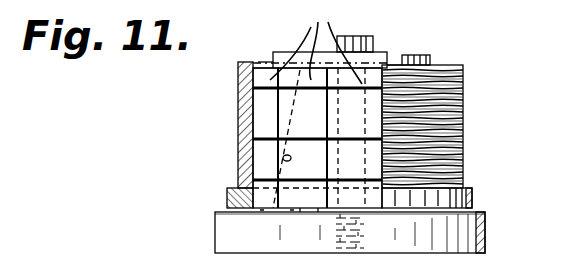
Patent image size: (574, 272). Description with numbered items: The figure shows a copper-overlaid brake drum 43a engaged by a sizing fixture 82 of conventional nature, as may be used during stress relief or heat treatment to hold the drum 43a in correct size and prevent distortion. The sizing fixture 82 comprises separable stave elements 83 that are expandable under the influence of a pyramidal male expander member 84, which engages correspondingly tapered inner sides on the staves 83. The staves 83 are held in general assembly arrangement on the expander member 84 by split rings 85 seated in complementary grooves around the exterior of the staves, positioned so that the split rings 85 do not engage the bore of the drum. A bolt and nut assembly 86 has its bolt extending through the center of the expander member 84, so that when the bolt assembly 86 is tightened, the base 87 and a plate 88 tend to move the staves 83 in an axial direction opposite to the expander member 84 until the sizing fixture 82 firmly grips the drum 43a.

The drum 43a is at (463, 120).
The sizing fixture 82 is at (260, 117).
The stave elements 83 is at (316, 49).
The expander member 84 is at (283, 155).
The split rings 85 is at (268, 90).
The bolt and nut assembly 86 is at (357, 36).
The base 87 is at (485, 223).
The plate 88 is at (393, 62).